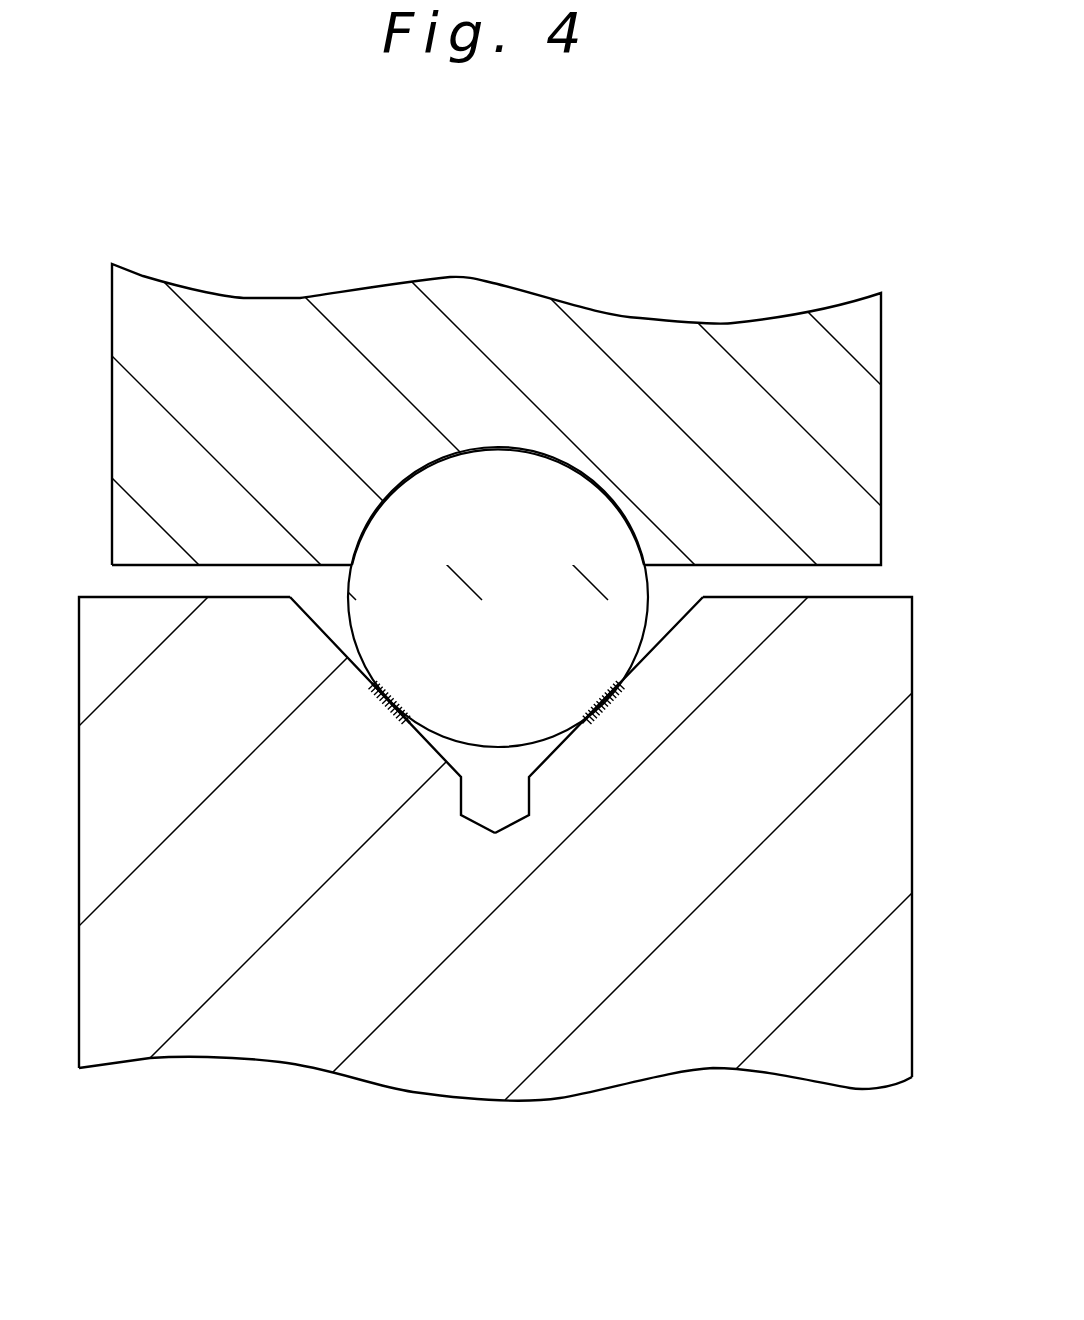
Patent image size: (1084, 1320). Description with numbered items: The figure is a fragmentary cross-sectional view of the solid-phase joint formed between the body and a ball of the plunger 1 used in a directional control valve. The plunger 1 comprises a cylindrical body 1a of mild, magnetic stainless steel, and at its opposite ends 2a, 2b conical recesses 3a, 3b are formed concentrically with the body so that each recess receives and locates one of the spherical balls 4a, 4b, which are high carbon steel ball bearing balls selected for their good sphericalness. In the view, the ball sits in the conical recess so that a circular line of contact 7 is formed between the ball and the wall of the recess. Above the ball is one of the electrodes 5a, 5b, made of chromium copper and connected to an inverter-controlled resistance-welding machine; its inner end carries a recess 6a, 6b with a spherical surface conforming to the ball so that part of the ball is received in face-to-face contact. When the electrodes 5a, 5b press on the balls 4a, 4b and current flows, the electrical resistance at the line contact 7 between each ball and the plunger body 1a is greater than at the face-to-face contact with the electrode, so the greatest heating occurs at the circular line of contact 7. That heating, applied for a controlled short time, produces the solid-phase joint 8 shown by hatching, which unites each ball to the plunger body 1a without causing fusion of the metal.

The plunger 1 is at (542, 878).
The cylindrical body 1a is at (643, 1063).
The end of the plunger body 2a is at (688, 712).
The end of the plunger body 2b is at (818, 598).
The conical recess 3a is at (337, 715).
The conical recess 3b is at (308, 614).
The spherical ball 4a is at (527, 595).
The spherical ball 4b is at (572, 492).
The electrode 5a is at (542, 425).
The electrode 5b is at (542, 425).
The recess 6a is at (498, 444).
The recess 6b is at (498, 444).
The circular line of contact 7 is at (388, 698).
The solid-phase joint 8 is at (380, 684).